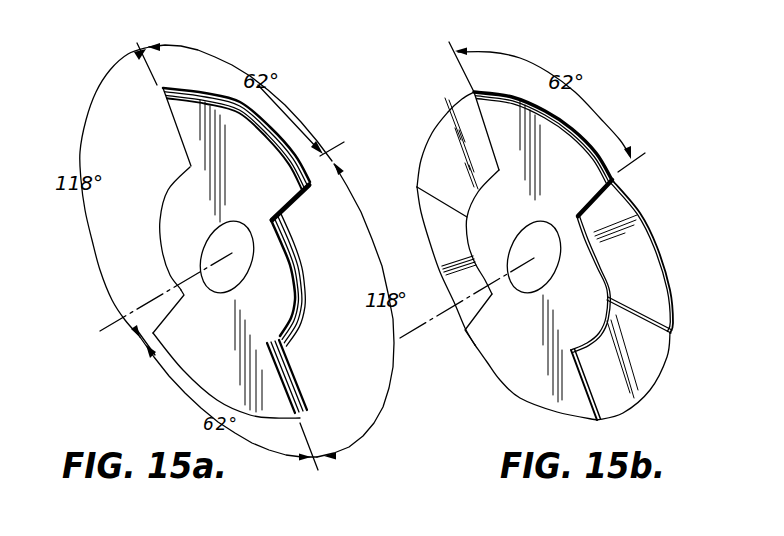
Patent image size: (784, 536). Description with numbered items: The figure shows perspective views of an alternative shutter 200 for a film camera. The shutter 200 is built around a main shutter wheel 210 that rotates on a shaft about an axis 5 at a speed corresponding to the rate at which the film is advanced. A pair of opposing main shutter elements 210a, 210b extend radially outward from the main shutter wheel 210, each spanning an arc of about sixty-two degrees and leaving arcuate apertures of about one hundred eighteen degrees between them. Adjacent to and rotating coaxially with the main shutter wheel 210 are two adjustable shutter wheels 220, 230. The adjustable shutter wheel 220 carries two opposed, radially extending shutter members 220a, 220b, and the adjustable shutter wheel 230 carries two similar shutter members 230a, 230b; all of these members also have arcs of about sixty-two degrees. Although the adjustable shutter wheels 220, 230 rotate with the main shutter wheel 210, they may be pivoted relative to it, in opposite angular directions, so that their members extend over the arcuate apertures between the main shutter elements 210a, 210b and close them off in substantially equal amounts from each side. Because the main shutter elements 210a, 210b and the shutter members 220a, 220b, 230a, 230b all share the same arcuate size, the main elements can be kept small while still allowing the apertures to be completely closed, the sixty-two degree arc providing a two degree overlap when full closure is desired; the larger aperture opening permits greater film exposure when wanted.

In FIG. 15A, the shutter 200 is at (128, 371).
In FIG. 15A, the main shutter wheel 210 is at (208, 386).
In FIG. 15B, the main shutter wheel 210 is at (545, 414).
In FIG. 15A, the main shutter element 210a is at (270, 386).
In FIG. 15B, the main shutter element 210a is at (512, 365).
In FIG. 15A, the main shutter element 210b is at (180, 124).
In FIG. 15B, the main shutter element 210b is at (544, 124).
In FIG. 15A, the adjustable shutter wheel 220 is at (282, 142).
In FIG. 15B, the shutter member 220a is at (637, 381).
In FIG. 15B, the shutter member 220b is at (445, 124).
In FIG. 15A, the adjustable shutter wheel 230 is at (297, 155).
In FIG. 15B, the shutter member 230a is at (450, 241).
In FIG. 15B, the shutter member 230b is at (645, 270).
In FIG. 15A, the axis 5 is at (107, 326).
In FIG. 15B, the axis 5 is at (420, 328).